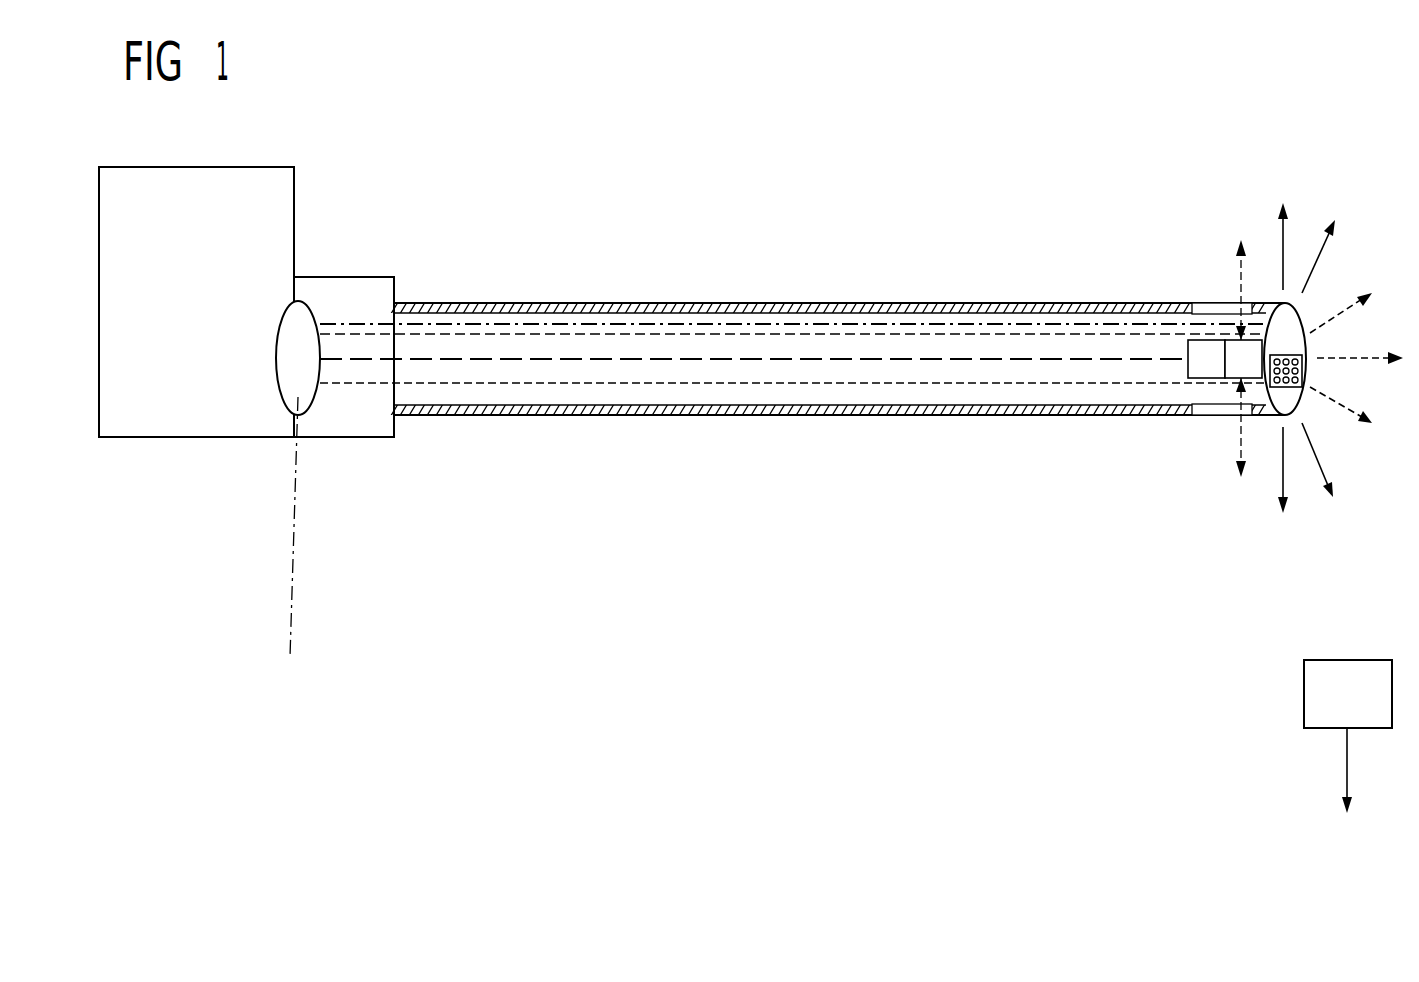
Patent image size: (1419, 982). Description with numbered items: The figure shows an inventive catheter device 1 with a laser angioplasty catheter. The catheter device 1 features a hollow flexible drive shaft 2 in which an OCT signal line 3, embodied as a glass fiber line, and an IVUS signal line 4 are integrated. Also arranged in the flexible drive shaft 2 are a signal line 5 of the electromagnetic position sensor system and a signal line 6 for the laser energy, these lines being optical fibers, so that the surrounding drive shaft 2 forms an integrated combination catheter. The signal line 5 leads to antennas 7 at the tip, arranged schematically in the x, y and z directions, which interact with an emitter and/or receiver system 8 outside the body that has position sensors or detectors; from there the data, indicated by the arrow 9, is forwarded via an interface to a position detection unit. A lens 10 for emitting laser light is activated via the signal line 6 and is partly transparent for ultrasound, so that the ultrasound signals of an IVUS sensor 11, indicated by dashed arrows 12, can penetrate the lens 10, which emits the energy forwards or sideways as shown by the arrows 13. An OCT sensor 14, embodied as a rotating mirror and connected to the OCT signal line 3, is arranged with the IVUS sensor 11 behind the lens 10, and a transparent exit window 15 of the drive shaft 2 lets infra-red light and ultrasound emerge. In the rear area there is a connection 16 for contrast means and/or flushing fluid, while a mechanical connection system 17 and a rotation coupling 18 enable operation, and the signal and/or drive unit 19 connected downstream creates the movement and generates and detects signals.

The catheter device 1 is at (584, 257).
The hollow flexible drive shaft 2 is at (480, 410).
The OCT signal line 3 is at (705, 361).
The IVUS signal line 4 is at (845, 333).
The signal line of the position sensor system 5 is at (588, 385).
The signal line for the laser energy 6 is at (733, 323).
The antennas 7 is at (1303, 370).
The emitter and/or receiver system 8 is at (1313, 695).
The arrow 9 is at (1347, 765).
The lens 10 is at (1287, 400).
The IVUS sensor 11 is at (1235, 367).
The dashed arrows 12 is at (1337, 307).
The arrows 13 is at (1282, 237).
The OCT sensor 14 is at (1197, 365).
The transparent exit window 15 is at (1205, 310).
The connection 16 is at (293, 587).
The mechanical connection system 17 is at (378, 287).
The rotation coupling 18 is at (287, 362).
The signal and/or drive unit 19 is at (282, 203).